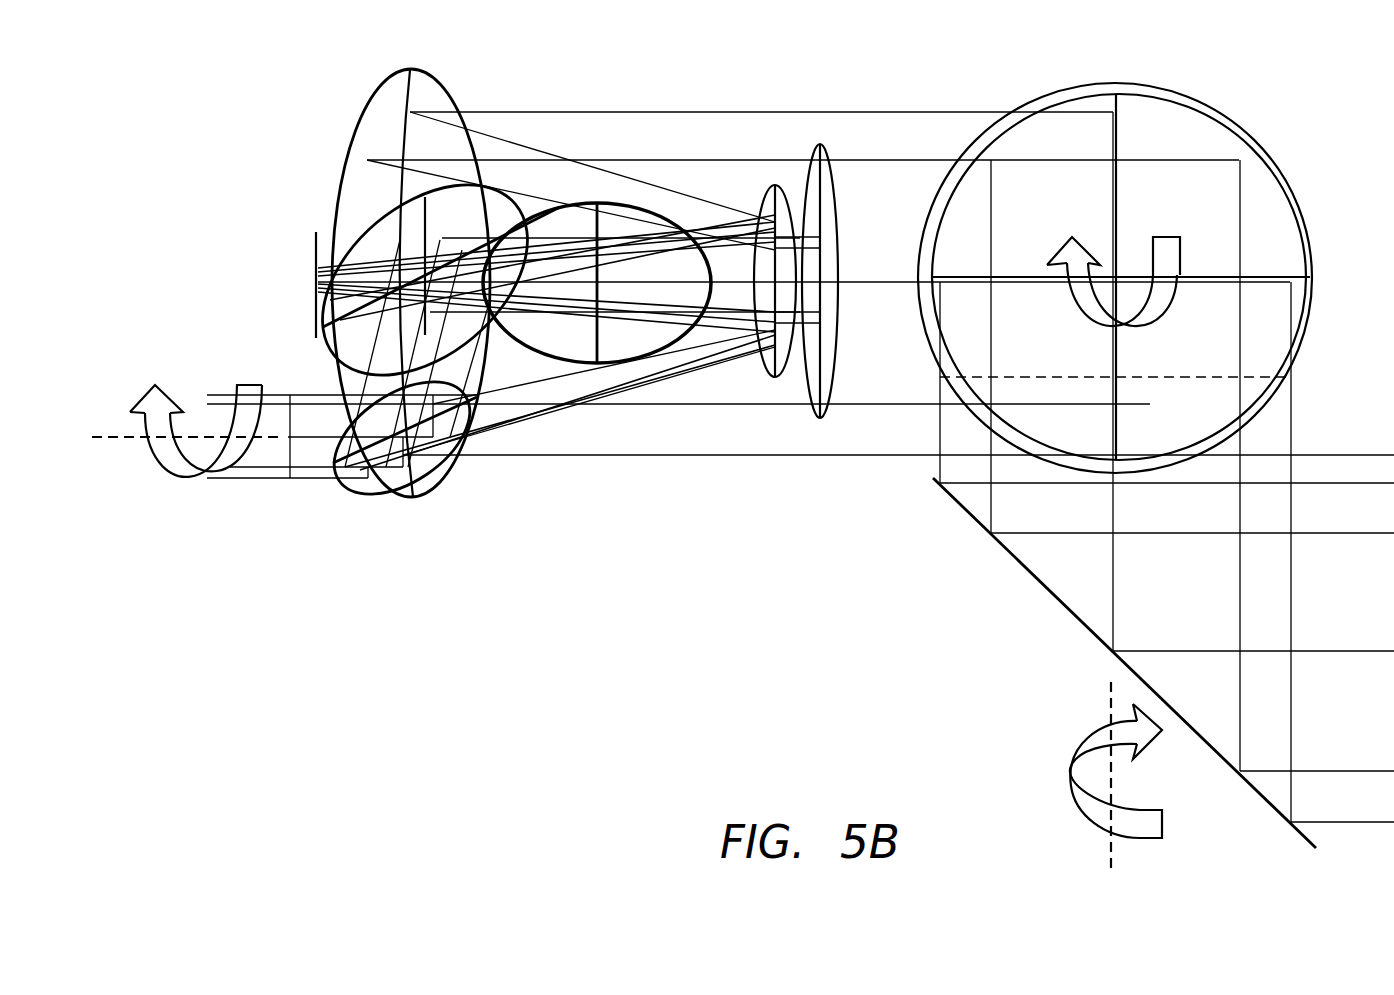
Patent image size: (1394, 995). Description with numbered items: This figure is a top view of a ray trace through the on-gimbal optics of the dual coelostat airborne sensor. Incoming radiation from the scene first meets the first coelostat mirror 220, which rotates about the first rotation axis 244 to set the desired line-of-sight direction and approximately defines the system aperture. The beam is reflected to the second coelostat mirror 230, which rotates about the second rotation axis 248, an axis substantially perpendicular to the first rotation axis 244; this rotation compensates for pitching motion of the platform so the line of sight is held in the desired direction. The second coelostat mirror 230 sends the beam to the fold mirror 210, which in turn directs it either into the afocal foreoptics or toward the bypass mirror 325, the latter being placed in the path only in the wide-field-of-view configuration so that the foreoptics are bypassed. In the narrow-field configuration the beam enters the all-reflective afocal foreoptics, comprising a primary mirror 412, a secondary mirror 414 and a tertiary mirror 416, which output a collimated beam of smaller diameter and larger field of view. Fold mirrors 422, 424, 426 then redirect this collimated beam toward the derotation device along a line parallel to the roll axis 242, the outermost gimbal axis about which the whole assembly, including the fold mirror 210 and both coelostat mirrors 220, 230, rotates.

The fold mirror 210 is at (1028, 97).
The second coelostat mirror 230 is at (1167, 96).
The first coelostat mirror 220 is at (1044, 589).
The roll axis 242 is at (187, 432).
The first rotation axis 244 is at (1111, 705).
The second rotation axis 248 is at (1093, 320).
The bypass mirror 325 is at (533, 210).
The primary mirror 412 is at (372, 102).
The secondary mirror 414 is at (773, 185).
The tertiary mirror 416 is at (820, 413).
The fold mirror 422 is at (315, 252).
The fold mirror 424 is at (380, 220).
The fold mirror 426 is at (362, 493).